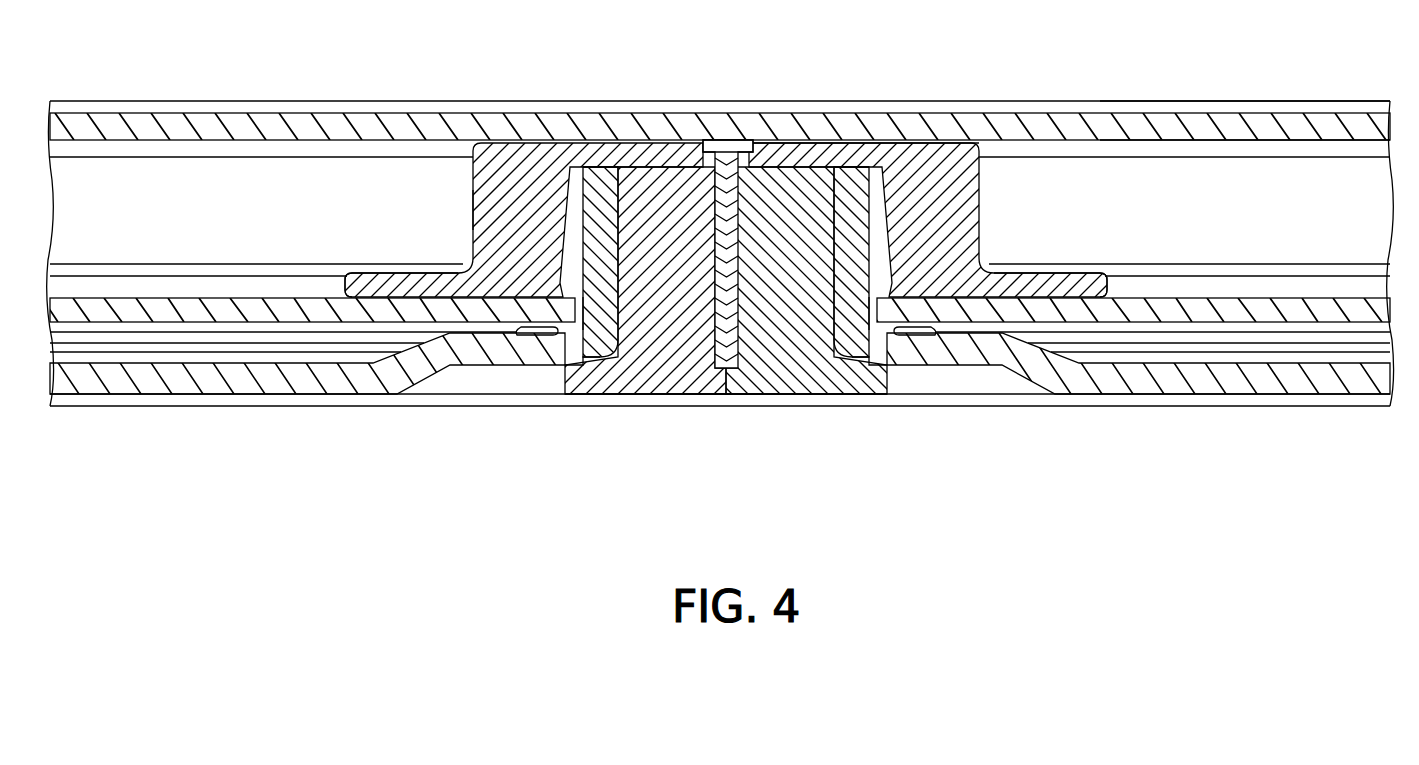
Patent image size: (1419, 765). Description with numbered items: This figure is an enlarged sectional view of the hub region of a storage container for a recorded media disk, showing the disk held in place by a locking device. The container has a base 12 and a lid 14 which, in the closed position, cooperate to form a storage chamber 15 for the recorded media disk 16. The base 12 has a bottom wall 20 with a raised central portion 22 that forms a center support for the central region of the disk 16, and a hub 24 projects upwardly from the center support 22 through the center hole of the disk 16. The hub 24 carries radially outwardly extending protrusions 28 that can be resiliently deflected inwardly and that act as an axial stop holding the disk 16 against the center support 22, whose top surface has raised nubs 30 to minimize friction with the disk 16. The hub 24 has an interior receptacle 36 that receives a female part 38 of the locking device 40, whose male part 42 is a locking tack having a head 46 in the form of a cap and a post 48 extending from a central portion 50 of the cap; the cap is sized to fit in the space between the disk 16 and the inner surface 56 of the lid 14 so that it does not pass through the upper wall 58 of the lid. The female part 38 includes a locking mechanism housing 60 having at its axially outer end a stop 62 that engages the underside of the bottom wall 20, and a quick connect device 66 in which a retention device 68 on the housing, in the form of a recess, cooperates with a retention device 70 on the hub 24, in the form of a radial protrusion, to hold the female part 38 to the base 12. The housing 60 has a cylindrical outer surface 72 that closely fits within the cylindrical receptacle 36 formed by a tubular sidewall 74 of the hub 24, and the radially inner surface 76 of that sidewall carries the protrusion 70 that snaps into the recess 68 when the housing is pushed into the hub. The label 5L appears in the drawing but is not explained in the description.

The base 12 is at (275, 412).
The lid 14 is at (350, 99).
The storage chamber 15 is at (276, 184).
The recorded media disk 16 is at (1120, 294).
The bottom wall 20 is at (166, 396).
The raised central portion 22 is at (470, 368).
The hub 24 is at (585, 163).
The protrusions 28 is at (563, 285).
The raised nubs 30 is at (560, 333).
The interior receptacle 36 is at (622, 172).
The female part 38 is at (680, 403).
The locking device 40 is at (749, 428).
The male part 42 is at (463, 190).
The head 46 is at (677, 140).
The post 48 is at (690, 155).
The central portion 50 is at (773, 150).
The inner surface 56 is at (1270, 143).
The upper wall 58 is at (1179, 127).
The locking mechanism housing 60 is at (643, 380).
The stop 62 is at (918, 397).
The quick connect device 66 is at (822, 204).
The retention device 68 is at (893, 205).
The retention device 70 is at (825, 218).
The cylindrical outer surface 72 is at (835, 426).
The tubular sidewall 74 is at (860, 226).
The radially inner surface 76 is at (617, 318).
The insert side wall 5L is at (487, 208).